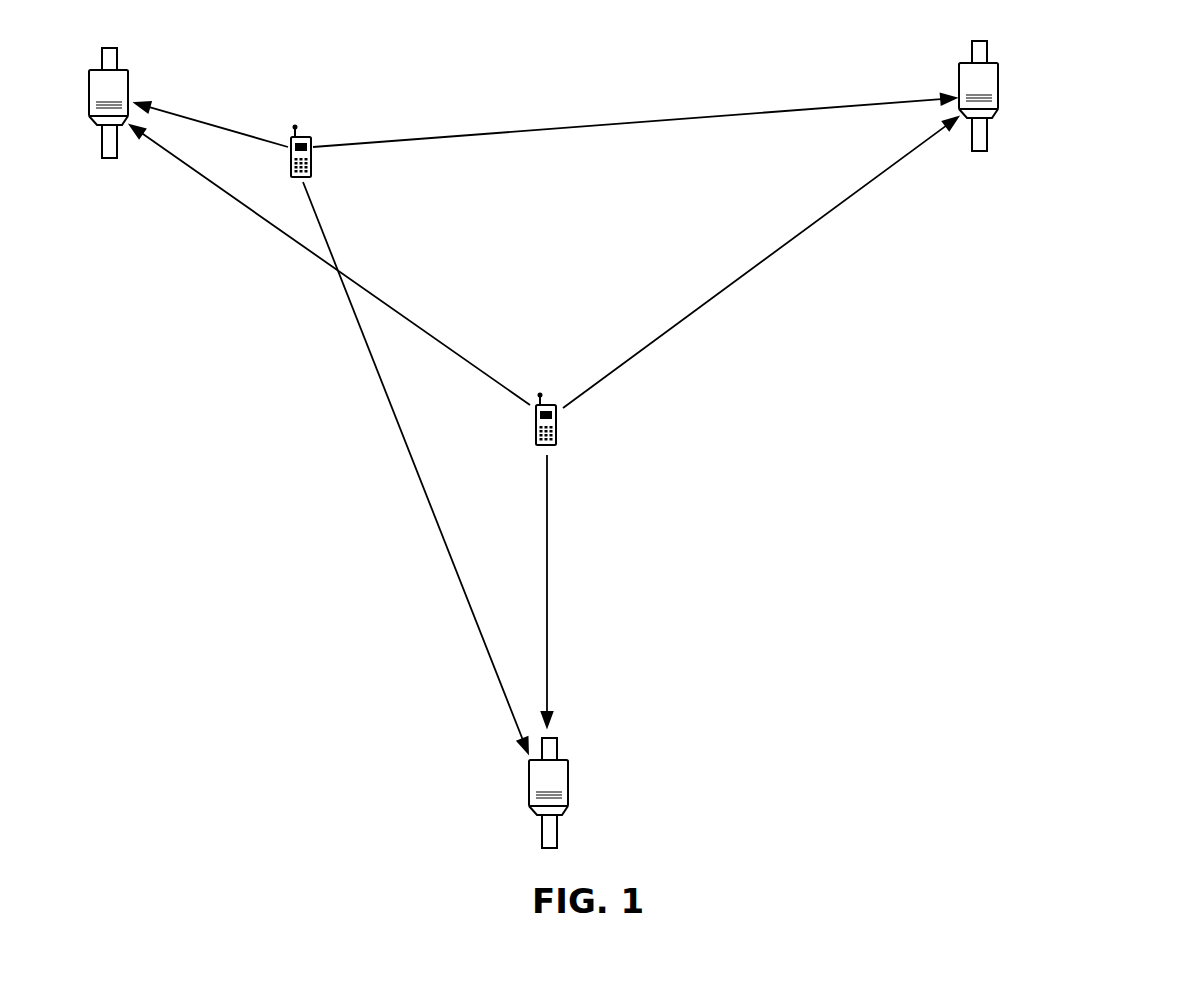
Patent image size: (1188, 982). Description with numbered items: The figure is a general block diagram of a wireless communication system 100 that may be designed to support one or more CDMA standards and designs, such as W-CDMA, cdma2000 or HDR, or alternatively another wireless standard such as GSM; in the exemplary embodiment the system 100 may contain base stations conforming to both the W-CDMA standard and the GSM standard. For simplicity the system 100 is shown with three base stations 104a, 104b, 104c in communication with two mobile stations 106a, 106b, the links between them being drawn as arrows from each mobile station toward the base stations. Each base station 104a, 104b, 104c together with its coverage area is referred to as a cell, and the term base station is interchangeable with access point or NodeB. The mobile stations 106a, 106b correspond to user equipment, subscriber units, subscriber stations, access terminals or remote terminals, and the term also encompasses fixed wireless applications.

The wireless communication system 100 is at (1121, 275).
The base station 104a is at (120, 66).
The base station 104b is at (989, 60).
The base station 104c is at (559, 757).
The mobile station 106a is at (303, 137).
The mobile station 106b is at (540, 447).